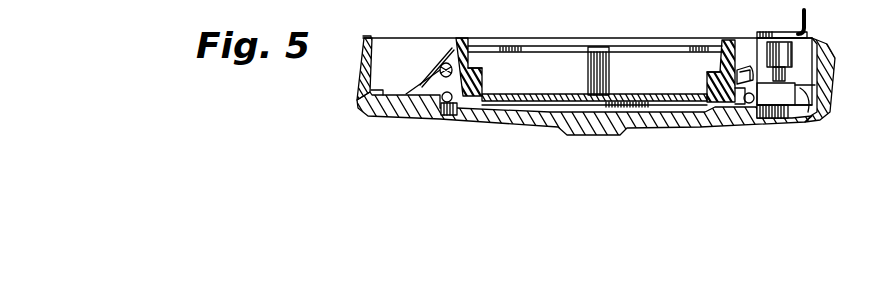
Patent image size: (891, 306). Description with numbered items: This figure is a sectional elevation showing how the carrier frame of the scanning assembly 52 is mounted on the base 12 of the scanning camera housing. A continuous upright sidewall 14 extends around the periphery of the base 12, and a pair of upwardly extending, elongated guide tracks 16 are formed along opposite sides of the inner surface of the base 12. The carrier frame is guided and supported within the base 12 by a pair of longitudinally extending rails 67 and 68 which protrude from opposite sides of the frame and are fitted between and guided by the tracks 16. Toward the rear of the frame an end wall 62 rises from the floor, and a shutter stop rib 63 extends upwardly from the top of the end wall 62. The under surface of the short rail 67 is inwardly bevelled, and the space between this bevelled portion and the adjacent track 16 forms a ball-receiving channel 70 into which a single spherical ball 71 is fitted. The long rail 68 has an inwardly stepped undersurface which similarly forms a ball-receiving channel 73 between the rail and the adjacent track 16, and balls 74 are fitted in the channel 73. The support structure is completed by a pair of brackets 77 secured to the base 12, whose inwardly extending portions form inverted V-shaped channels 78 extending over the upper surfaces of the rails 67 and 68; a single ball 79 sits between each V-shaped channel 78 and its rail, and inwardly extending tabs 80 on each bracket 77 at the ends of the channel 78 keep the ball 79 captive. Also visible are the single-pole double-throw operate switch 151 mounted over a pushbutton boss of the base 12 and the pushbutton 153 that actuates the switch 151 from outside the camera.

The base 12 is at (599, 82).
The sidewall 14 is at (362, 41).
The guide tracks 16 is at (432, 110).
The scanning assembly 52 is at (604, 44).
The end wall 62 is at (579, 81).
The shutter stop rib 63 is at (532, 53).
The rail 67 is at (481, 86).
The rail 68 is at (707, 90).
The ball-receiving channel 70 is at (455, 112).
The spherical ball 71 is at (446, 104).
The ball-receiving channel 73 is at (730, 104).
The balls 74 is at (745, 104).
The brackets 77 is at (408, 92).
The inverted V-shaped channels 78 is at (462, 42).
The ball 79 is at (447, 62).
The tabs 80 is at (472, 68).
The operate switch 151 is at (793, 50).
The pushbutton 153 is at (790, 118).